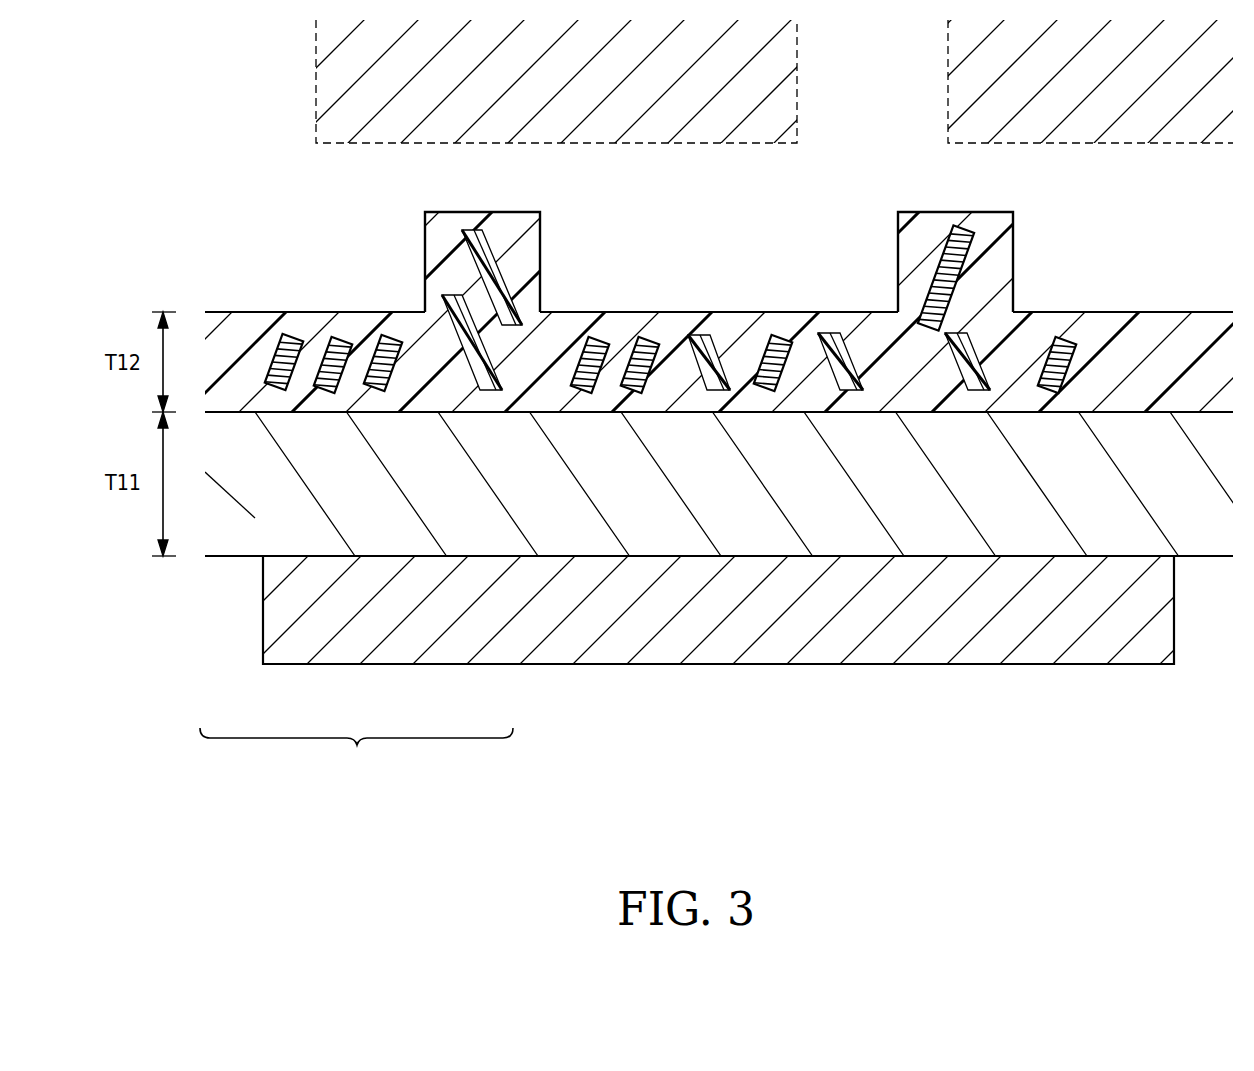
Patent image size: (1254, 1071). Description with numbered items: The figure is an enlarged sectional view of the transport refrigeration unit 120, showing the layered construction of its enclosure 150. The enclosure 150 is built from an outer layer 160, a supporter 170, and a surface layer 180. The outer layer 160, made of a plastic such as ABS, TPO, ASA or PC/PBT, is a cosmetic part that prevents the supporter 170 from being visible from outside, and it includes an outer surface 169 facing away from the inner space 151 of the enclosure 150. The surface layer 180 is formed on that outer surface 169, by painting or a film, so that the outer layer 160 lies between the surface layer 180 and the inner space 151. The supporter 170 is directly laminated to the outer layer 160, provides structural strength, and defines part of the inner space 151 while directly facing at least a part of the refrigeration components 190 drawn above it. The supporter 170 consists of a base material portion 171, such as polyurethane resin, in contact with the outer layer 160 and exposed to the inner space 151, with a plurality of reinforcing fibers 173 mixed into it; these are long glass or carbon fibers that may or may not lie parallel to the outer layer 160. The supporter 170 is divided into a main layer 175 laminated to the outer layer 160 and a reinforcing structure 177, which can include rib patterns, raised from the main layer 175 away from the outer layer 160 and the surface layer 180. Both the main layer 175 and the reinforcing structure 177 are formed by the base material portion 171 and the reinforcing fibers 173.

The transport refrigeration unit 120 is at (918, 692).
The enclosure 150 is at (357, 745).
The inner space 151 is at (217, 183).
The outer layer 160 is at (258, 520).
The outer surface 169 is at (1215, 558).
The supporter 170 is at (386, 388).
The base material portion 171 is at (628, 337).
The reinforcing fibers 173 is at (303, 336).
The main layer 175 is at (670, 340).
The reinforcing structure 177 is at (507, 228).
The surface layer 180 is at (520, 637).
The refrigeration components 190 is at (316, 80).